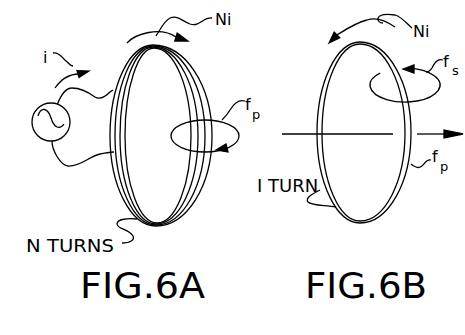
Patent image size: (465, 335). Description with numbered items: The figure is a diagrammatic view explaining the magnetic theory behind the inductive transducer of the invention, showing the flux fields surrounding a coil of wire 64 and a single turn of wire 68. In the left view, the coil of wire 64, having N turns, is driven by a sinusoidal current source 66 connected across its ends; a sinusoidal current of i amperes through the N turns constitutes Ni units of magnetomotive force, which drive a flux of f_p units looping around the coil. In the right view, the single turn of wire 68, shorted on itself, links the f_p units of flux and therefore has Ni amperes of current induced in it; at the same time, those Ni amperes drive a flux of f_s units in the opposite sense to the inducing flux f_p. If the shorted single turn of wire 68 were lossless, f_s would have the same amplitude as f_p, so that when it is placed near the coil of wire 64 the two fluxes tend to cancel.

In FIG. 6A, the coil of wire 64 is at (194, 212).
In FIG. 6A, the sinusoidal current source 66 is at (38, 136).
In FIG. 6B, the single turn of wire 68 is at (388, 216).